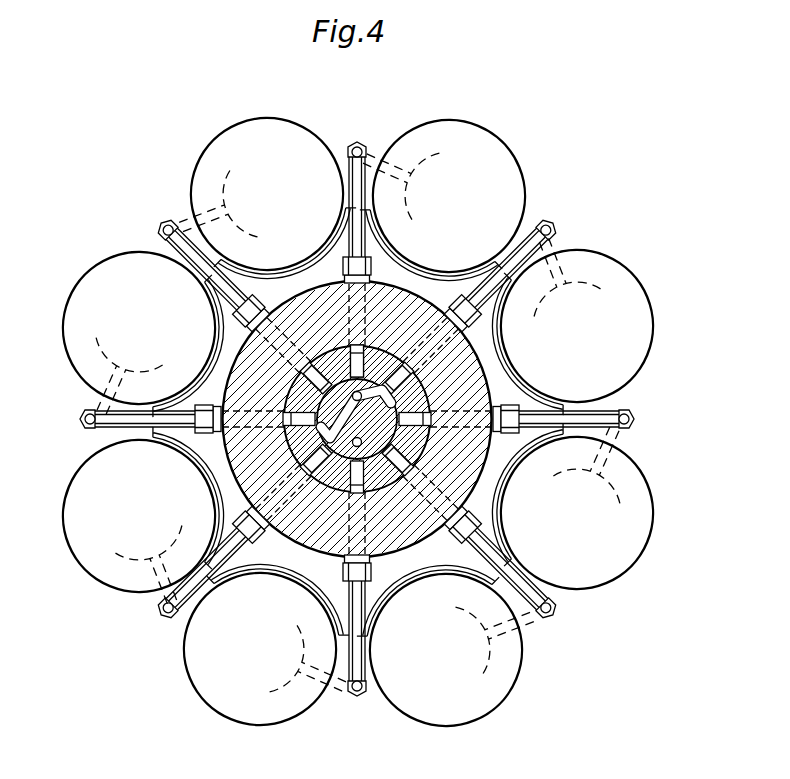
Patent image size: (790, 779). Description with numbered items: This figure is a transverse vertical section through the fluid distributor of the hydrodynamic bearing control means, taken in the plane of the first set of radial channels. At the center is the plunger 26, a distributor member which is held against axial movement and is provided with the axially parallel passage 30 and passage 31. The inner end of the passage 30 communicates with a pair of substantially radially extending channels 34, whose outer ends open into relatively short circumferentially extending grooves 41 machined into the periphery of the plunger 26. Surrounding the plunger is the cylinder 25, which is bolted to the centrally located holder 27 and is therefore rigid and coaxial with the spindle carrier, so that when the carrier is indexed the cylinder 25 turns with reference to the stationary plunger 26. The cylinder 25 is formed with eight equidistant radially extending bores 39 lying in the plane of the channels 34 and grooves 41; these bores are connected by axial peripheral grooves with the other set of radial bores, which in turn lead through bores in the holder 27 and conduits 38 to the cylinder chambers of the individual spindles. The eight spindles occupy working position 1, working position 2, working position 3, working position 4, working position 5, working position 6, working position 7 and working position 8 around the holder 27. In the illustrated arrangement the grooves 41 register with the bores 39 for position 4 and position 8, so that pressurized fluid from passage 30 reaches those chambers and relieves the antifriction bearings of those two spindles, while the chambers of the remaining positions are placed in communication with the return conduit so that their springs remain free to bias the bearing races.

The working position one 1 is at (672, 542).
The working position two 2 is at (528, 726).
The working position three 3 is at (192, 721).
The working position four 4 is at (55, 534).
The working position five 5 is at (106, 257).
The working position six 6 is at (313, 126).
The working position seven 7 is at (546, 186).
The working position eight 8 is at (677, 349).
The cylinder 25 is at (407, 455).
The plunger 26 is at (325, 432).
The holder 27 is at (408, 537).
The passage 30 is at (333, 361).
The passage 31 is at (332, 477).
The radial channels 34 is at (313, 385).
The conduits 38 is at (553, 235).
The radial bores 39 is at (398, 384).
The circumferential grooves 41 is at (330, 468).